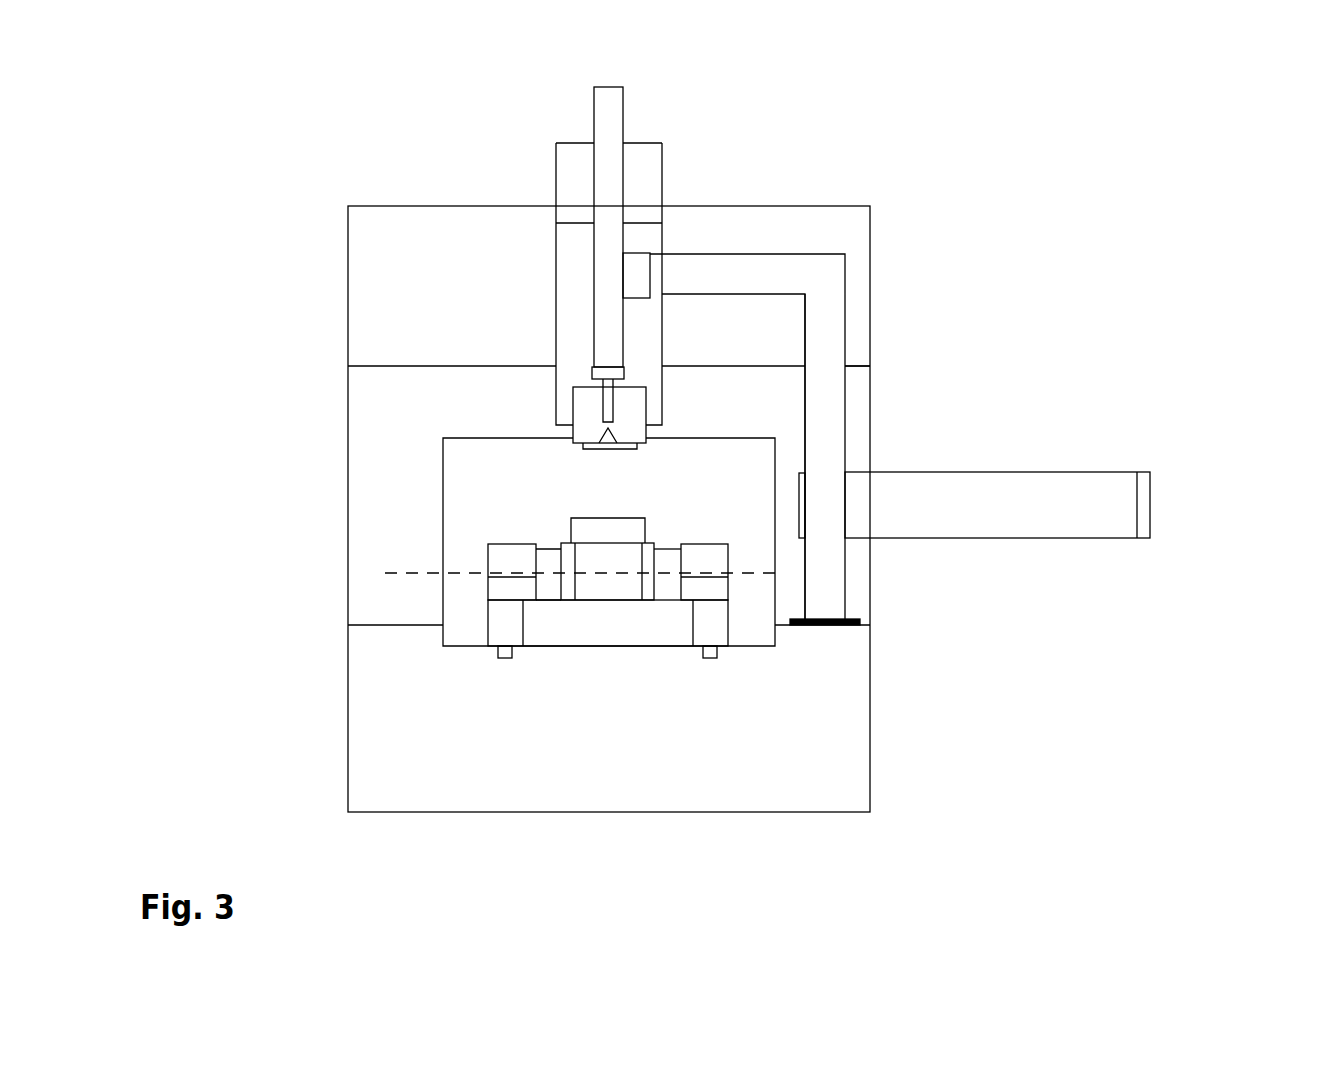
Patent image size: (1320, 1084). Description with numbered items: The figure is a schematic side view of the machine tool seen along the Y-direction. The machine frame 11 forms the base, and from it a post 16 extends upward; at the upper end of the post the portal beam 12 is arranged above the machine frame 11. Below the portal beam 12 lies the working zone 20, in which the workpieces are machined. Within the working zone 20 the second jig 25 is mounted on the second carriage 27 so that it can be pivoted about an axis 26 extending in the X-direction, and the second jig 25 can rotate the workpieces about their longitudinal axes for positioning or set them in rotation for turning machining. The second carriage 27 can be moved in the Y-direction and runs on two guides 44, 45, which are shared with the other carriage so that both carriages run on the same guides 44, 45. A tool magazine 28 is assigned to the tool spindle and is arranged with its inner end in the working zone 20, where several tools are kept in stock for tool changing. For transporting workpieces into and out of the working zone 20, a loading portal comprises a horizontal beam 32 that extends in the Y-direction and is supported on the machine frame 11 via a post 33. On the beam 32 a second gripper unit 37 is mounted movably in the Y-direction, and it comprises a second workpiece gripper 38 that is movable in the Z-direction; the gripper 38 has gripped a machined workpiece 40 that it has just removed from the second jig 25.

The machine frame 11 is at (812, 762).
The portal beam 12 is at (440, 253).
The post 16 is at (857, 432).
The working zone 20 is at (609, 542).
The second jig 25 is at (600, 585).
The axis 26 is at (410, 575).
The second carriage 27 is at (500, 615).
The tool magazine 28 is at (1060, 502).
The horizontal beam 32 is at (637, 272).
The post 33 is at (823, 391).
The second gripper unit 37 is at (637, 200).
The second workpiece gripper 38 is at (608, 406).
The machined workpiece 40 is at (580, 431).
The guide 44 is at (502, 660).
The guide 45 is at (713, 660).